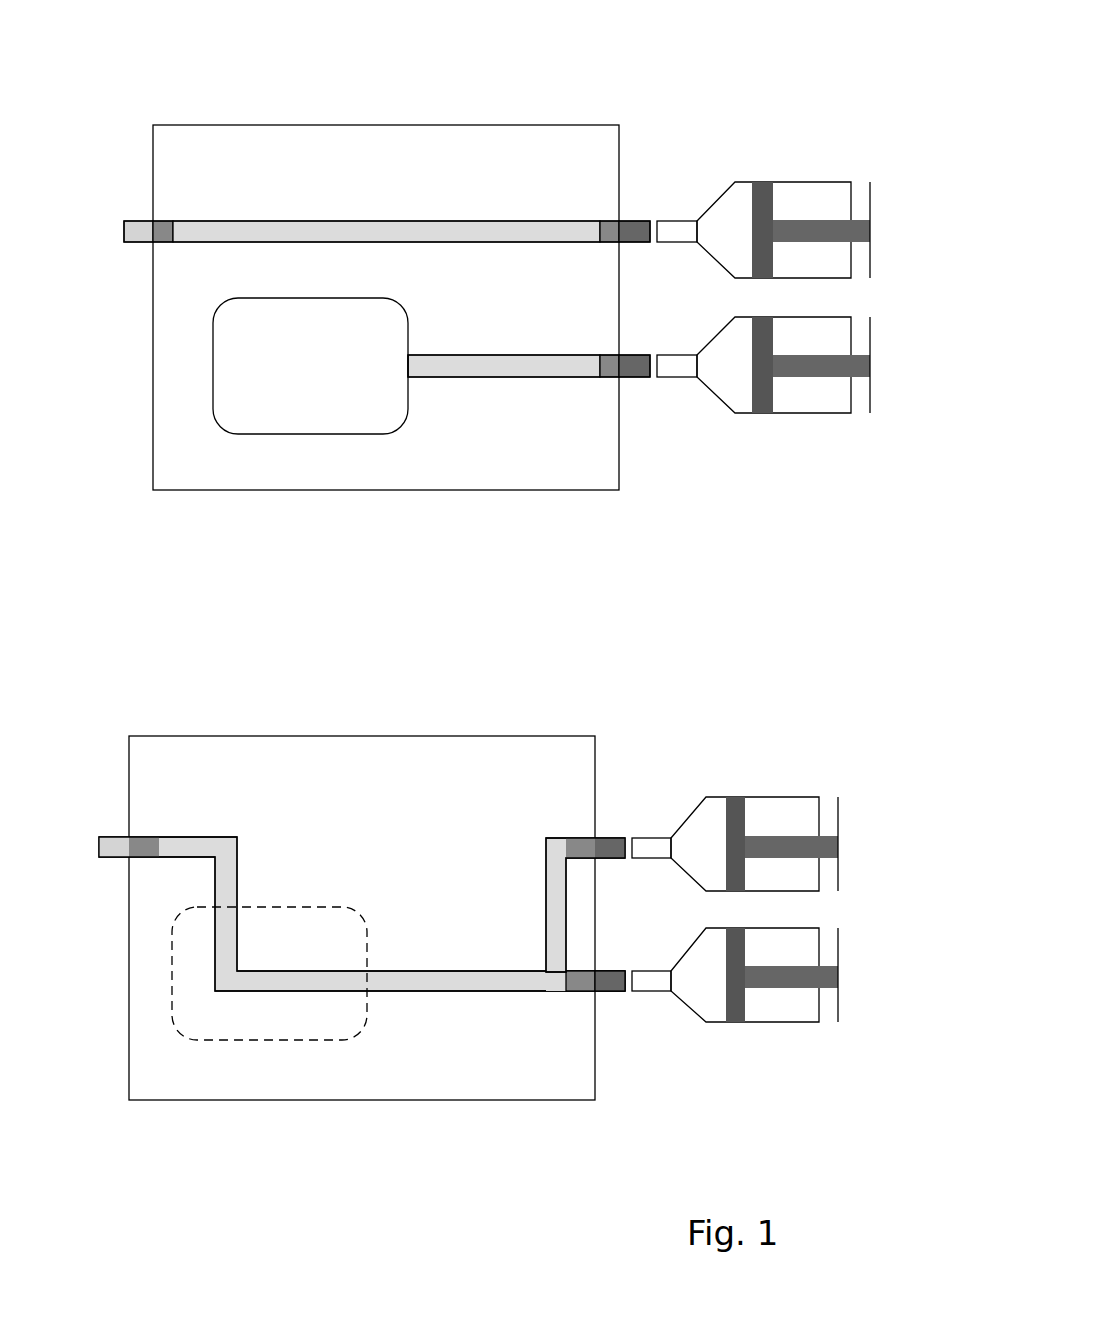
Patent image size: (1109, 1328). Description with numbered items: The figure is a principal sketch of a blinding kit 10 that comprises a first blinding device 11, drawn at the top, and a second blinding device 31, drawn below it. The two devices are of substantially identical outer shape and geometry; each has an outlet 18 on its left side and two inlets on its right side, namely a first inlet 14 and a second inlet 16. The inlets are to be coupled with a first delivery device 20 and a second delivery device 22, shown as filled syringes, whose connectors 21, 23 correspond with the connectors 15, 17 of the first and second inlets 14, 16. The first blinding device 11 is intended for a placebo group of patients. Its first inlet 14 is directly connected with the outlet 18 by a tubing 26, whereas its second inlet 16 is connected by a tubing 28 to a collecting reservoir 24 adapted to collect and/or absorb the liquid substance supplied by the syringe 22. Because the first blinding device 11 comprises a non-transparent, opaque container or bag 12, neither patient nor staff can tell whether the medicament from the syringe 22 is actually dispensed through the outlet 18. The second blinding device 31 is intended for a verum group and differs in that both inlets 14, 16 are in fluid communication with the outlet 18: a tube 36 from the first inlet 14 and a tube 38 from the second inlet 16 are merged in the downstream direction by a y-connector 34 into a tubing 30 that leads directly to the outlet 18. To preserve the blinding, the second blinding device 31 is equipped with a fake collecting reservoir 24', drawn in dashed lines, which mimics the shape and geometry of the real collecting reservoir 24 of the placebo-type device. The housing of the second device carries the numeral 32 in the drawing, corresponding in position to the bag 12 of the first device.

The blinding kit 10 is at (125, 592).
The first blinding device 11 is at (386, 251).
The container or bag 12 is at (275, 165).
The first inlet 14 is at (632, 192).
The connector 15 is at (630, 243).
The second inlet 16 is at (630, 388).
The connector 17 is at (643, 383).
The outlet 18 is at (130, 205).
The first delivery device 20 is at (812, 195).
The connector 21 is at (677, 232).
The second delivery device 22 is at (835, 400).
The connector 23 is at (680, 380).
The collecting reservoir 24 is at (310, 429).
The fake collecting reservoir 24' is at (269, 1043).
The tubing 26 is at (498, 243).
The tubing 28 is at (520, 378).
The tubing 30 is at (497, 993).
The second blinding device 31 is at (362, 864).
The substrate body 32 is at (253, 775).
The y-connector 34 is at (553, 993).
The tube 36 is at (546, 879).
The tube 38 is at (582, 993).